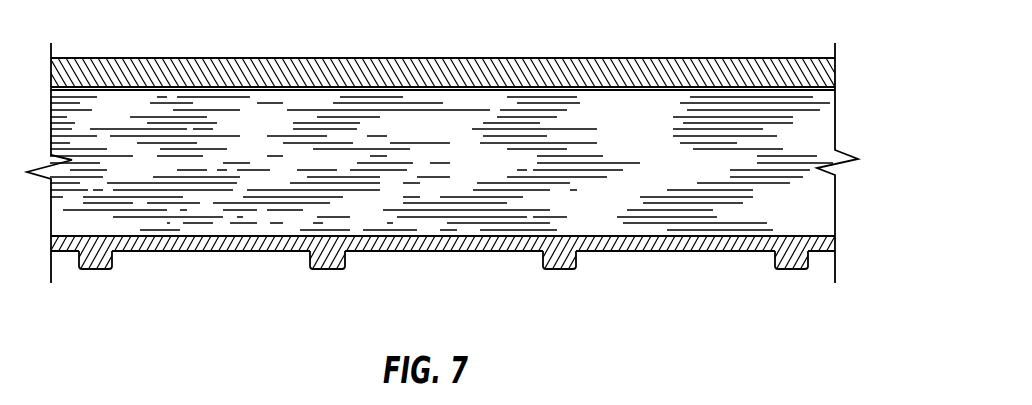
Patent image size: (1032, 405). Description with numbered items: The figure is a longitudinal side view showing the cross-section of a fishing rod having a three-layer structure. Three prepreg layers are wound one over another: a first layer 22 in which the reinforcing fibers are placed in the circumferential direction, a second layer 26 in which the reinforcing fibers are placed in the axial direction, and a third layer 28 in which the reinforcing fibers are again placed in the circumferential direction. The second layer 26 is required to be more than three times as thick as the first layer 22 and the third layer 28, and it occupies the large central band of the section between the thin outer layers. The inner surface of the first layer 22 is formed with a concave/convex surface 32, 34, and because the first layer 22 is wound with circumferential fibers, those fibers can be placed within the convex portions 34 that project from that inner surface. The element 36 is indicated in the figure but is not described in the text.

The first layer 22 is at (523, 251).
The second layer 26 is at (822, 116).
The third layer 28 is at (625, 58).
The concave/convex surface 32 is at (422, 252).
The convex portions 34 is at (328, 270).
The top surface 36 is at (276, 56).